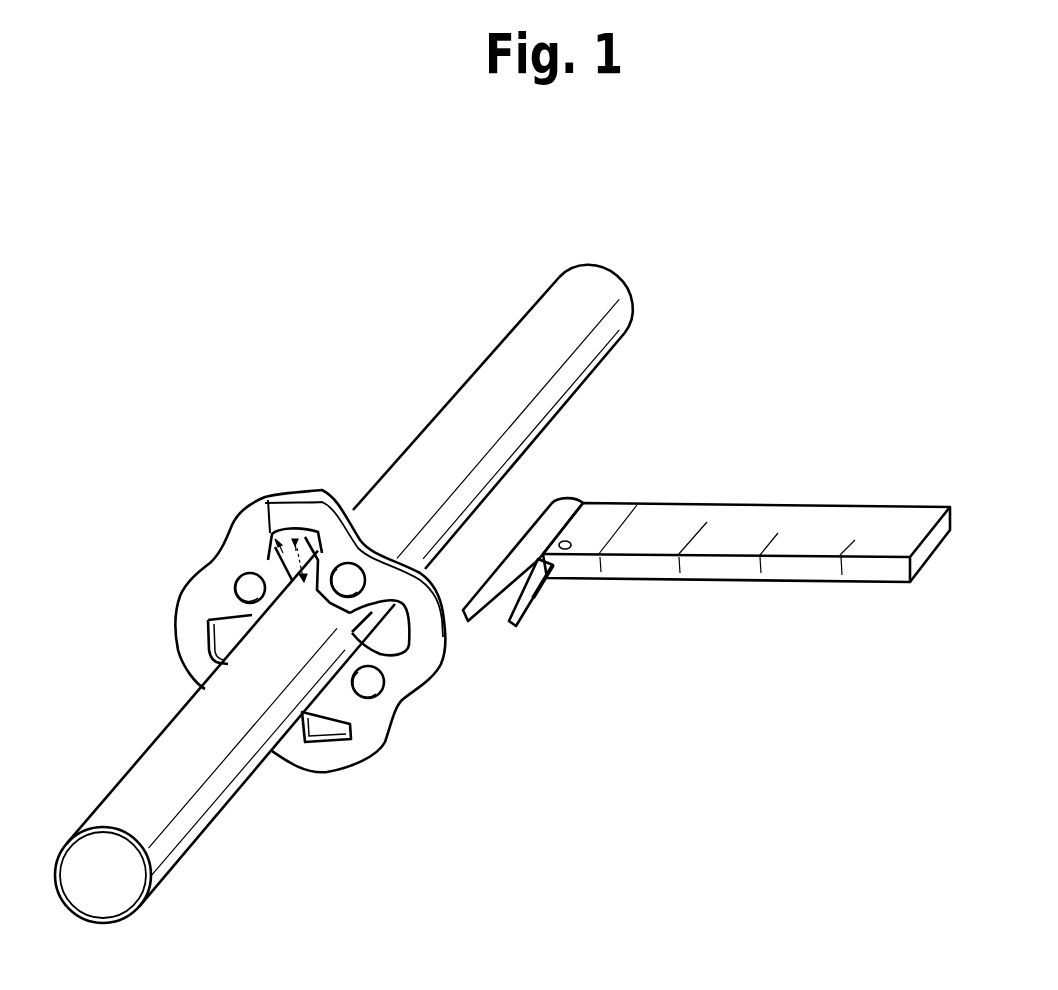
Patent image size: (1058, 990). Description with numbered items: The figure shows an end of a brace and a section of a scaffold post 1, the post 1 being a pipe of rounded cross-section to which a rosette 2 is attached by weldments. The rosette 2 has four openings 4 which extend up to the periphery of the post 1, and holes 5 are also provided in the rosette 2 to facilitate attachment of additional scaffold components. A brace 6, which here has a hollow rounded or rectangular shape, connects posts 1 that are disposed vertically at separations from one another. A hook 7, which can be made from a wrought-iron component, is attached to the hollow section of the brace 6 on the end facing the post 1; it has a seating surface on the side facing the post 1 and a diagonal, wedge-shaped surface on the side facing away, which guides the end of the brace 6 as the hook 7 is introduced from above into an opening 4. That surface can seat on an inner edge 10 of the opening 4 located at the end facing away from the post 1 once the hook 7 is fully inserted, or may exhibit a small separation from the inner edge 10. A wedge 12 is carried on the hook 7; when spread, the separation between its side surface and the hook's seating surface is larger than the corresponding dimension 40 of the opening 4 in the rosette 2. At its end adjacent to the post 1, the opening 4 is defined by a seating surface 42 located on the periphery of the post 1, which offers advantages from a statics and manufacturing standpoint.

The post 1 is at (187, 817).
The rosette 2 is at (357, 750).
The opening 4 is at (387, 632).
The hole 5 is at (370, 681).
The brace 6 is at (820, 522).
The hook 7 is at (547, 520).
The inner edge 10 is at (268, 560).
The wedge 12 is at (532, 597).
The dimension of the opening 40 is at (318, 533).
The seating surface 42 is at (369, 610).